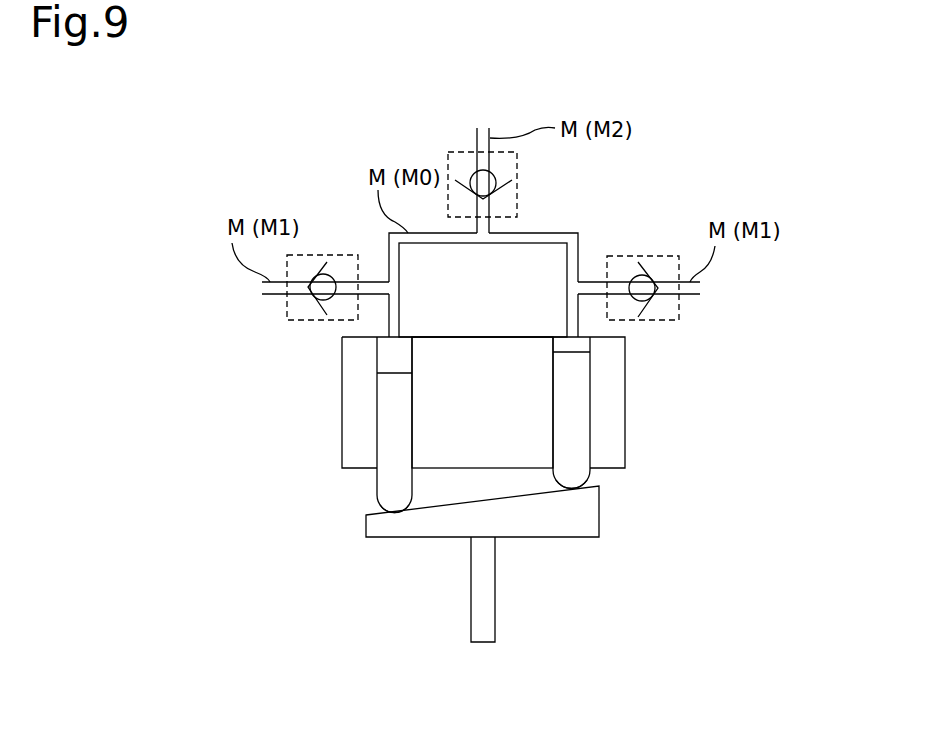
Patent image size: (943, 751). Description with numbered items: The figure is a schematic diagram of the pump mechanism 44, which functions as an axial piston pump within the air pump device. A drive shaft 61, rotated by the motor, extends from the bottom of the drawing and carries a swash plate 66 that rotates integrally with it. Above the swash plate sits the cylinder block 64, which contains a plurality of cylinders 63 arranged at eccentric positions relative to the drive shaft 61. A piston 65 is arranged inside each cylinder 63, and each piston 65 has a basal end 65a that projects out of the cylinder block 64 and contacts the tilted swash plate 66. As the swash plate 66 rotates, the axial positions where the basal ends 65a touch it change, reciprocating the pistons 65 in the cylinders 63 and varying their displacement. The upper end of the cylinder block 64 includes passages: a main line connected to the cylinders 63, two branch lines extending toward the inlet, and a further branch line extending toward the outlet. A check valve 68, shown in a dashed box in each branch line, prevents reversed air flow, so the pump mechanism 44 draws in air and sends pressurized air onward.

The pump mechanism 44 is at (125, 106).
The check valve 68 is at (448, 152).
The cylinder block 64 is at (342, 470).
The cylinder 63 is at (378, 408).
The piston 65 is at (375, 447).
The basal end 65a is at (395, 511).
The swash plate 66 is at (599, 503).
The drive shaft 61 is at (495, 618).